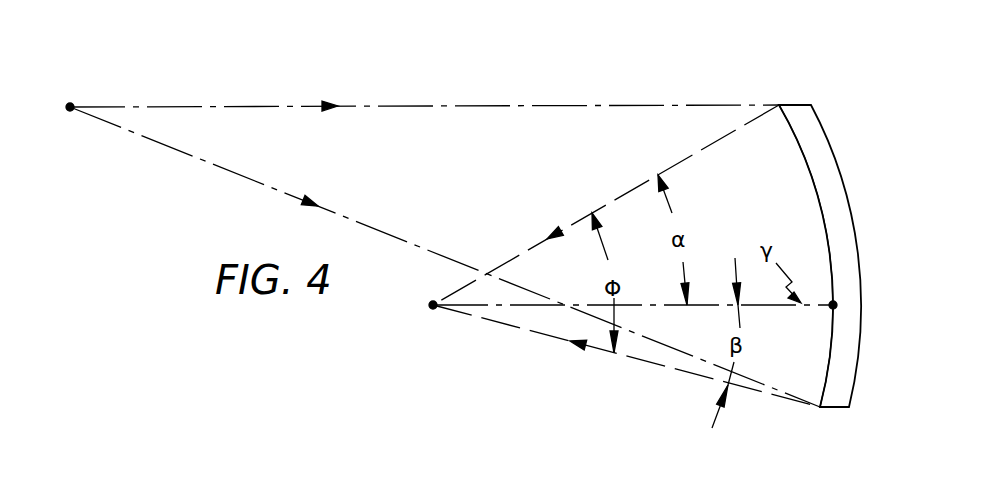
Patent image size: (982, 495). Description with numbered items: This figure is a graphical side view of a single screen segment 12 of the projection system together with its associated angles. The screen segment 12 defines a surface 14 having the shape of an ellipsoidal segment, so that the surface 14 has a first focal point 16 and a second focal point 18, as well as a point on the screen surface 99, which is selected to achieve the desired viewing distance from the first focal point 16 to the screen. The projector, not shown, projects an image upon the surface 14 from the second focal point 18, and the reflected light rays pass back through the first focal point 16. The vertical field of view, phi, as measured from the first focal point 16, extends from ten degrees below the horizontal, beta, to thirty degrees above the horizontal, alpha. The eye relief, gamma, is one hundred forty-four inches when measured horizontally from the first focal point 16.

The screen segment 12 is at (846, 162).
The surface 14 is at (810, 198).
The first focal point 16 is at (430, 310).
The second focal point 18 is at (70, 102).
The point on the screen surface 99 is at (829, 310).